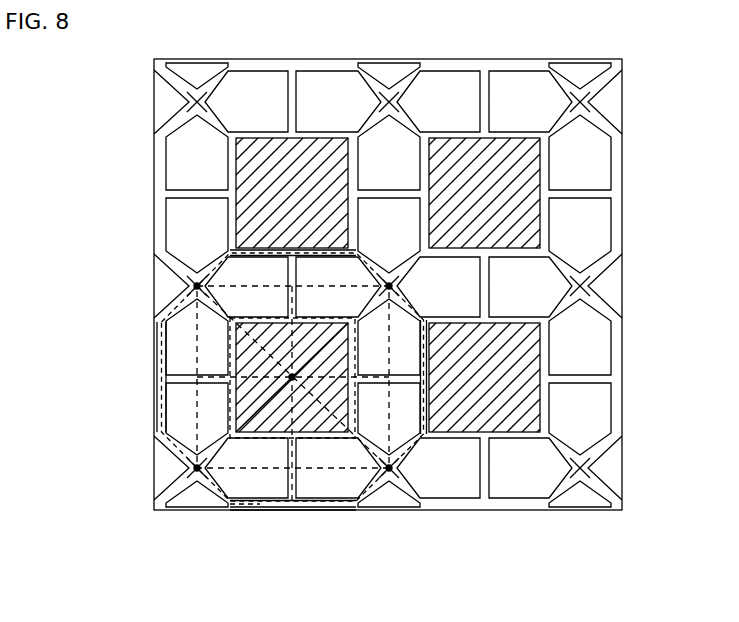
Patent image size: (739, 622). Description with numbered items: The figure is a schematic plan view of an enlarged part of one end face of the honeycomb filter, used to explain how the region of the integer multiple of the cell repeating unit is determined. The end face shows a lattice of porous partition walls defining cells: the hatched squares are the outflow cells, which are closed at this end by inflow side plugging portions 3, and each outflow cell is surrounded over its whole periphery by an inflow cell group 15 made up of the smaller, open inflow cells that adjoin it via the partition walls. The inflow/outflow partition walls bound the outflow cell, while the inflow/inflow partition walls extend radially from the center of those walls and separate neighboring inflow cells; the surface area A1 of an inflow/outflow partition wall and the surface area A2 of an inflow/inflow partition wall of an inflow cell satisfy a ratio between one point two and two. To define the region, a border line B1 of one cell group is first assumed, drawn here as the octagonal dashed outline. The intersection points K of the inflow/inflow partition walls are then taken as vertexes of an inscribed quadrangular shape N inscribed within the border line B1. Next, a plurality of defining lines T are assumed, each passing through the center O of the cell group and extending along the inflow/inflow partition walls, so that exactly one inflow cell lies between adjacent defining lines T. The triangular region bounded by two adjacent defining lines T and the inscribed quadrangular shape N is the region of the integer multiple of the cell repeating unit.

The inflow side plugging portion 3 is at (245, 157).
The intersection point K is at (196, 286).
The surface area of the inflow/outflow partition wall A1 is at (214, 301).
The surface area of the inflow/inflow partition wall A2 is at (231, 418).
The center of the cell group O is at (290, 378).
The inscribed quadrangular shape N is at (325, 472).
The defining line T is at (298, 460).
The inflow cell group 15 is at (284, 512).
The border line B1 is at (243, 507).